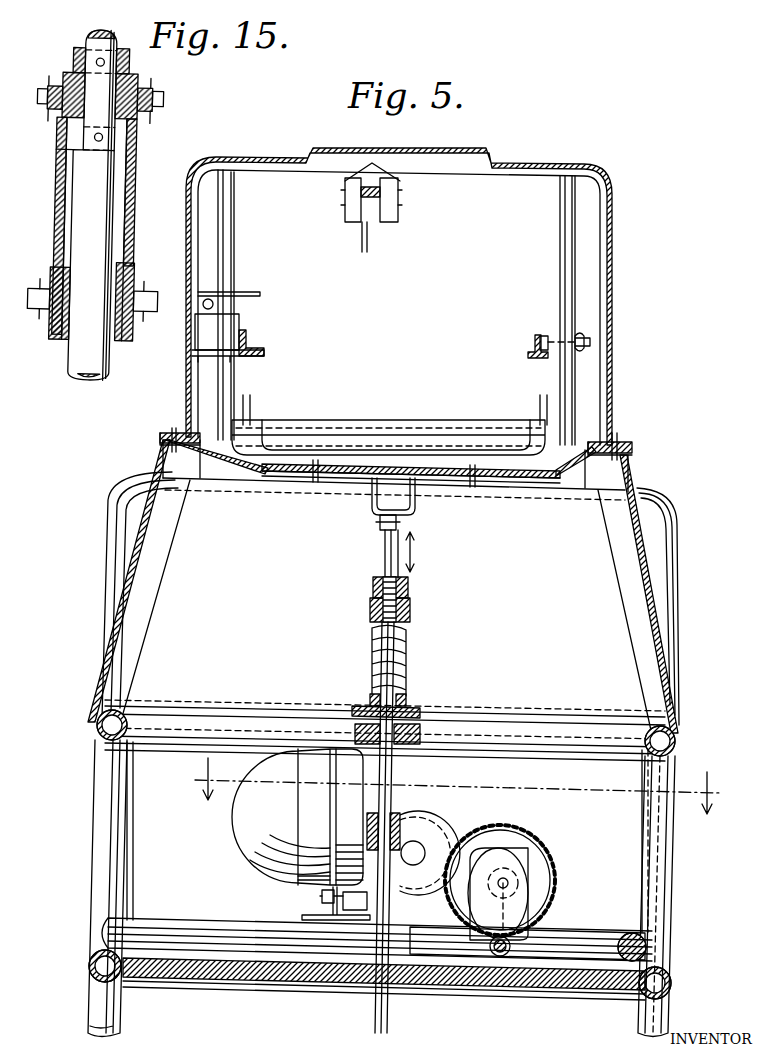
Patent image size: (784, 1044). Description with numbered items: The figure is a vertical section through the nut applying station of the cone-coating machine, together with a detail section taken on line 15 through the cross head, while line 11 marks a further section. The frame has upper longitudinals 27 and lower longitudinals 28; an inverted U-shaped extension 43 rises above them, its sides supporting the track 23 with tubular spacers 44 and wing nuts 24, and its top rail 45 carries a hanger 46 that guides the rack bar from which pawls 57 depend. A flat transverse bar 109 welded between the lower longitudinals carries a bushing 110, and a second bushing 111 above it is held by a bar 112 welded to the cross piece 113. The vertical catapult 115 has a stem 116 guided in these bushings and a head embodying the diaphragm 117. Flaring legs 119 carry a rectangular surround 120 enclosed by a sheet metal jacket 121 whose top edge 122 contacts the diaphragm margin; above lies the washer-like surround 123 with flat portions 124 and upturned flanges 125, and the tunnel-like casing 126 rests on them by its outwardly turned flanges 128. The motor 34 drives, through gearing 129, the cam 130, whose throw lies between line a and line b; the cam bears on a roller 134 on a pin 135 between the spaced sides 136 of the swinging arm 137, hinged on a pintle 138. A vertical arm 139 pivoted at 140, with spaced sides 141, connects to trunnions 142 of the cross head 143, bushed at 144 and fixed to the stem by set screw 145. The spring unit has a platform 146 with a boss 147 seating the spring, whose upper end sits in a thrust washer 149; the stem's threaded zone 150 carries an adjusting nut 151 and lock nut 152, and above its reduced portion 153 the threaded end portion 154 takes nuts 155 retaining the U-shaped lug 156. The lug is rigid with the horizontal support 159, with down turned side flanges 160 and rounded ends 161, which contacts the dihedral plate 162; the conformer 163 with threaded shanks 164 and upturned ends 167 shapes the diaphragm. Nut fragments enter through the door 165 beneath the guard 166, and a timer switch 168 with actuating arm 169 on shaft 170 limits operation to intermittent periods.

In FIG. 5, the section line 11— 11 is at (451, 790).
In FIG. 5, the section line 15— 15 is at (381, 767).
In FIG. 5, the track 23 is at (252, 350).
In FIG. 5, the wing nut 24 is at (590, 344).
In FIG. 5, the upper longitudinal 27 is at (96, 732).
In FIG. 5, the lower longitudinal 28 is at (89, 966).
In FIG. 5, the motor 34 is at (297, 817).
In FIG. 5, the inverted U-shaped extension 43 is at (232, 245).
In FIG. 5, the tubular spacer 44 is at (545, 336).
In FIG. 5, the top rail 45 is at (532, 160).
In FIG. 5, the hanger 46 is at (338, 212).
In FIG. 5, the pawl 57 is at (367, 248).
In FIG. 5, the flat transverse bar 109 is at (485, 992).
In FIG. 5, the bushing 110 is at (420, 962).
In FIG. 5, the bushing 111 is at (420, 733).
In FIG. 5, the bar 112 is at (355, 733).
In FIG. 5, the cross piece 113 is at (246, 718).
In FIG. 5, the vertical catapult 115 is at (376, 564).
In FIG. 15, the stem 116 is at (112, 165).
In FIG. 5, the stem 116 is at (382, 640).
In FIG. 5, the diaphragm 117 is at (428, 464).
In FIG. 5, the leg 119 is at (158, 580).
In FIG. 5, the rectangular surround 120 is at (162, 462).
In FIG. 5, the sheet metal jacket 121 is at (676, 580).
In FIG. 5, the top edge 122 is at (210, 480).
In FIG. 5, the washer-like surround 123 is at (588, 445).
In FIG. 5, the flat portion 124 is at (160, 437).
In FIG. 5, the flange 125 is at (258, 420).
In FIG. 5, the tunnel-like casing 126 is at (612, 255).
In FIG. 5, the outwardly turned flange 128 is at (172, 428).
In FIG. 5, the gearing 129 is at (448, 838).
In FIG. 5, the cam 130 is at (510, 852).
In FIG. 5, the roller 134 is at (530, 944).
In FIG. 5, the pin 135 is at (490, 946).
In FIG. 15, the spaced side 136 is at (136, 268).
In FIG. 5, the spaced side 136 is at (590, 930).
In FIG. 5, the swinging arm 137 is at (606, 935).
In FIG. 5, the pintle 138 is at (646, 946).
In FIG. 15, the vertical arm 139 is at (55, 164).
In FIG. 5, the vertical arm 139 is at (430, 853).
In FIG. 15, the pivot 140 is at (42, 290).
In FIG. 5, the pivot 140 is at (378, 930).
In FIG. 15, the spaced side 141 is at (55, 225).
In FIG. 5, the spaced side 141 is at (419, 860).
In FIG. 15, the trunnion 142 is at (161, 96).
In FIG. 15, the cross head 143 is at (60, 80).
In FIG. 5, the cross head 143 is at (367, 830).
In FIG. 15, the bushing 144 is at (70, 55).
In FIG. 5, the bushing 144 is at (378, 816).
In FIG. 15, the set screw 145 is at (82, 42).
In FIG. 5, the set screw 145 is at (406, 660).
In FIG. 5, the platform 146 is at (372, 705).
In FIG. 5, the boss 147 is at (380, 192).
In FIG. 5, the thrust washer 149 is at (370, 612).
In FIG. 5, the threaded zone 150 is at (373, 582).
In FIG. 5, the adjusting nut 151 is at (408, 594).
In FIG. 5, the lock nut 152 is at (408, 582).
In FIG. 5, the reduced portion 153 is at (385, 550).
In FIG. 5, the threaded end portion 154 is at (412, 505).
In FIG. 5, the nut 155 is at (380, 524).
In FIG. 5, the U-shaped lug 156 is at (405, 515).
In FIG. 5, the elongated horizontal support 159 is at (520, 484).
In FIG. 5, the down turned side flange 160 is at (495, 484).
In FIG. 5, the rounded down turned end 161 is at (245, 470).
In FIG. 5, the plate 162 is at (268, 478).
In FIG. 5, the conformer 163 is at (334, 420).
In FIG. 5, the threaded shank 164 is at (312, 480).
In FIG. 5, the door 165 is at (460, 148).
In FIG. 5, the guard 166 is at (350, 175).
In FIG. 5, the upturned end 167 is at (266, 430).
In FIG. 5, the timer switch 168 is at (228, 338).
In FIG. 5, the actuating arm 169 is at (255, 292).
In FIG. 5, the shaft 170 is at (212, 300).
In FIG. 5, the line a is at (512, 928).
In FIG. 5, the line b is at (548, 881).